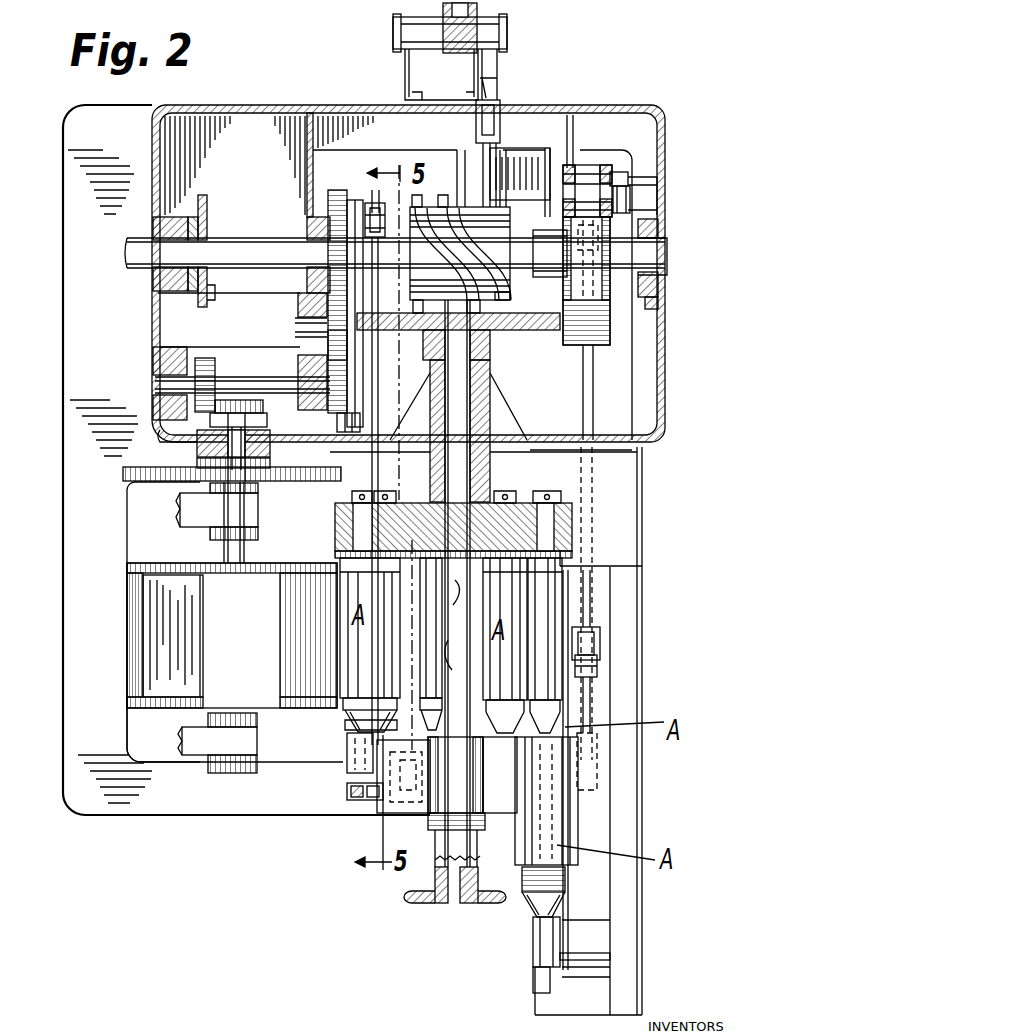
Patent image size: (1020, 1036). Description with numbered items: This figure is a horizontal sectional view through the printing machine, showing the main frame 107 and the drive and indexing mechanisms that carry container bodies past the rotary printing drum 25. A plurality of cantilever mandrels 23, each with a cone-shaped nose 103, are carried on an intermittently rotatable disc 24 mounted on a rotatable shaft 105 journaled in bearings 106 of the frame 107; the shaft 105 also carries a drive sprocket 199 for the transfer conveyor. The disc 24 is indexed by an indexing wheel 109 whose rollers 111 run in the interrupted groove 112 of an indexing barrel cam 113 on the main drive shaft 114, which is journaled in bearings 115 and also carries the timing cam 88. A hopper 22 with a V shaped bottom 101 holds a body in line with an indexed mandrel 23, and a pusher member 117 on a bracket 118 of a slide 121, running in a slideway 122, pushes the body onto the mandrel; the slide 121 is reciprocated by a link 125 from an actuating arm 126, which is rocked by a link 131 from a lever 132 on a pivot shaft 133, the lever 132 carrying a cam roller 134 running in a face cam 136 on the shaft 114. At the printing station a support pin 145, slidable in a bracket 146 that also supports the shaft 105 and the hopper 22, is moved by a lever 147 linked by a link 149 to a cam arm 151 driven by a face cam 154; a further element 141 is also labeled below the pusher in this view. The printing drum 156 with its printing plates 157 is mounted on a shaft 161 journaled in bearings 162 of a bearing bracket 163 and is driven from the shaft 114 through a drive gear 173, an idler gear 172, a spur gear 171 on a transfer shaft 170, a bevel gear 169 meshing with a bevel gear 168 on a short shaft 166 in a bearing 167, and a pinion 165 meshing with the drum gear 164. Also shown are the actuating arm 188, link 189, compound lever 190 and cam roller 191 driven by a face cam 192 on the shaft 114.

The actuating arm 188 is at (480, 10).
The link 189 is at (490, 82).
The compound lever 190 is at (486, 160).
The cam roller 191 is at (572, 165).
The face cam 192 is at (586, 180).
The cam roller 134 is at (622, 175).
The lever 132 is at (622, 200).
The pivot shaft 133 is at (455, 200).
The frame 107 is at (642, 387).
The bearings 115 is at (178, 220).
The timing cam 88 is at (208, 296).
The main drive shaft 114 is at (250, 247).
The drive gear 173 is at (335, 192).
The idler gear 172 is at (335, 345).
The spur gear 171 is at (340, 431).
The face cam 154 is at (368, 203).
The cam arm 151 is at (379, 222).
The link 149 is at (378, 382).
The indexing barrel cam 113 is at (460, 254).
The interrupted groove 112 is at (505, 297).
The face cam 136 is at (603, 338).
The link 131 is at (588, 408).
The rollers 111 is at (503, 330).
The indexing wheel 109 is at (484, 345).
The bearings 106 is at (482, 403).
The shaft 105 is at (458, 470).
The drive sprocket 199 is at (425, 903).
The disc 24 is at (565, 530).
The mandrels 23 is at (357, 565).
The noses 103 is at (357, 722).
The support pin 145 is at (352, 778).
The lever 147 is at (372, 802).
The bracket 146 is at (405, 820).
The hopper 22 is at (580, 810).
The pusher member 117 is at (560, 882).
The nozzle 141 is at (530, 900).
The bracket 118 is at (580, 940).
The slide 121 is at (587, 910).
The slideway 122 is at (614, 988).
The V shaped bottom 101 is at (567, 830).
The actuating arm 126 is at (593, 685).
The link 125 is at (597, 780).
The transfer shaft 170 is at (160, 385).
The bevel gear 169 is at (209, 360).
The bevel gear 168 is at (233, 403).
The bearing 167 is at (200, 437).
The short shaft 166 is at (283, 420).
The pinion 165 is at (197, 462).
The drum gear 164 is at (135, 478).
The shaft 161 is at (226, 548).
The bearings 162 is at (262, 535).
The printing drum 156 is at (272, 585).
The printing plates 157 is at (145, 665).
The rotary printing drum 25 is at (276, 695).
The bearing bracket 163 is at (140, 733).